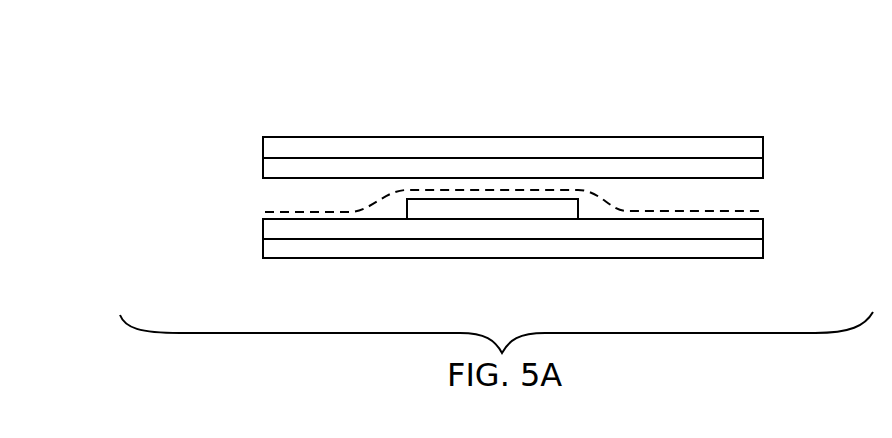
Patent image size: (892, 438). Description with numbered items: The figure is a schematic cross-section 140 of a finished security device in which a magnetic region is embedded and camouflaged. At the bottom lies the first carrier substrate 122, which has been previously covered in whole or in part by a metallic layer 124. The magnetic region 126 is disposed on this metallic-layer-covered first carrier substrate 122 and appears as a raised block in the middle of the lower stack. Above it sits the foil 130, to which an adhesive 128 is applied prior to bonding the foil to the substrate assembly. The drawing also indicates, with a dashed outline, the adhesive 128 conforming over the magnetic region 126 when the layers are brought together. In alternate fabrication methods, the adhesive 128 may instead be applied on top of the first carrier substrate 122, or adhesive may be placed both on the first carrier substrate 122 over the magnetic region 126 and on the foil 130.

The cross-section 140 is at (146, 58).
The foil 130 is at (265, 150).
The adhesive 128 is at (280, 170).
The metallic layer 124 is at (270, 225).
The first carrier substrate 122 is at (277, 247).
The magnetic region 126 is at (488, 210).